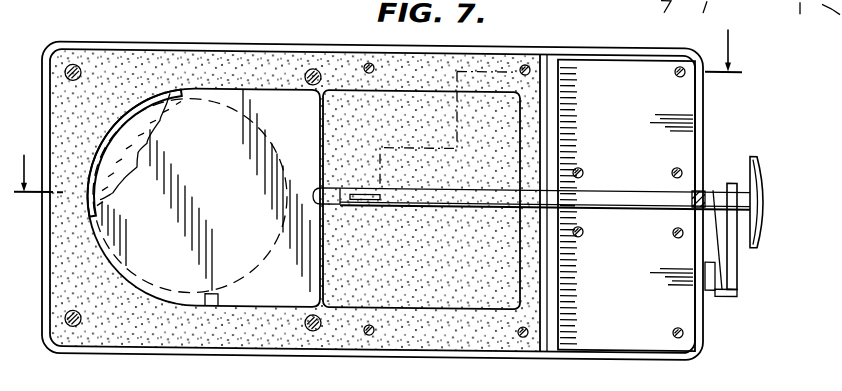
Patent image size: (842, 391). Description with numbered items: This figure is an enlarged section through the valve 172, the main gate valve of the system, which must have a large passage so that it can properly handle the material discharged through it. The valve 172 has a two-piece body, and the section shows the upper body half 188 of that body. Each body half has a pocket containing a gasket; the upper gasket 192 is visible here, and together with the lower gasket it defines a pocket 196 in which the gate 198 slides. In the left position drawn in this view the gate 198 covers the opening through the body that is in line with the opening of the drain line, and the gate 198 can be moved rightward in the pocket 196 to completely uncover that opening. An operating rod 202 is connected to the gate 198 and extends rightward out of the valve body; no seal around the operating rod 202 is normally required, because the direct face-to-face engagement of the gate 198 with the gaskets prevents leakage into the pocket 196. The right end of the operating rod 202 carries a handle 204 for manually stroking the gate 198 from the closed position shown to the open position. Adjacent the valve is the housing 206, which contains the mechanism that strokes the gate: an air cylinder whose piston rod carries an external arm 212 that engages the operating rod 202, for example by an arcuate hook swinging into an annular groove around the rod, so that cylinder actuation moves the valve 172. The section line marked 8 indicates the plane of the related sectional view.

The valve 172 is at (298, 29).
The section line 8- 8 is at (386, 111).
The upper body half 188 is at (93, 353).
The upper gasket 192 is at (182, 331).
The pocket 196 is at (418, 300).
The gate 198 is at (267, 288).
The operating rod 202 is at (713, 192).
The handle 204 is at (760, 165).
The housing 206 is at (766, 0).
The external arm 212 is at (733, 245).